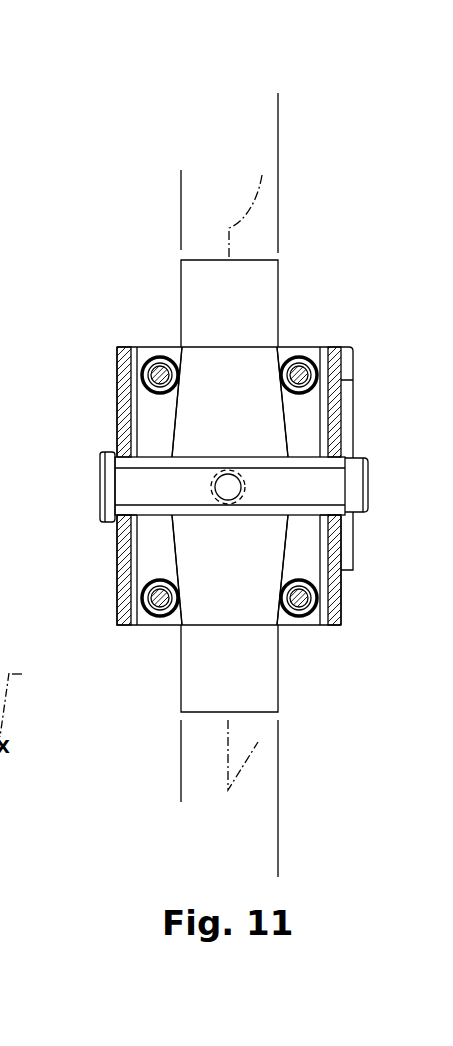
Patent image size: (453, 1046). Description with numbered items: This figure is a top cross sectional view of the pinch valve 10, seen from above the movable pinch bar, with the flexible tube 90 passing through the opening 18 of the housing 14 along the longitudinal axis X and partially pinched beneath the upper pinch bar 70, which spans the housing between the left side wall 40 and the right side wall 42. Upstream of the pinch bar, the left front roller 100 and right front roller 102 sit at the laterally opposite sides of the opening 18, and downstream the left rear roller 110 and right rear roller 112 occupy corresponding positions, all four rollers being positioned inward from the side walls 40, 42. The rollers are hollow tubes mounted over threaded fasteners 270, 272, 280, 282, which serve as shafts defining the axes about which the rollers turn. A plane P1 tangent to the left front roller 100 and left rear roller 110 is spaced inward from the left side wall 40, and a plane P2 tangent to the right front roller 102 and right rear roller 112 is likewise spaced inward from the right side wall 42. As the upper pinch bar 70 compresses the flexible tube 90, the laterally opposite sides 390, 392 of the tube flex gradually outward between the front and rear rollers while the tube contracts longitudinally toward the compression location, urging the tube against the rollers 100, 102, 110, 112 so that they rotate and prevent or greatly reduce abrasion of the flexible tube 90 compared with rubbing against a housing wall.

The pinch valve 10 is at (150, 115).
The housing 14 is at (110, 360).
The opening 18 is at (312, 410).
The left side wall 40 is at (117, 400).
The right side wall 42 is at (333, 592).
The upper pinch bar 70 is at (300, 456).
The flexible tube 90 is at (198, 287).
The left front roller 100 is at (152, 620).
The right front roller 102 is at (307, 620).
The left rear roller 110 is at (153, 357).
The right rear roller 112 is at (295, 355).
The threaded fastener 270 is at (178, 588).
The threaded fastener 272 is at (283, 590).
The threaded fastener 280 is at (186, 381).
The threaded fastener 282 is at (282, 380).
The lateral side of the flexible tube 390 is at (120, 557).
The lateral side of the flexible tube 392 is at (300, 534).
The plane P1 is at (180, 192).
The plane P2 is at (280, 118).
The longitudinal axis X is at (248, 469).